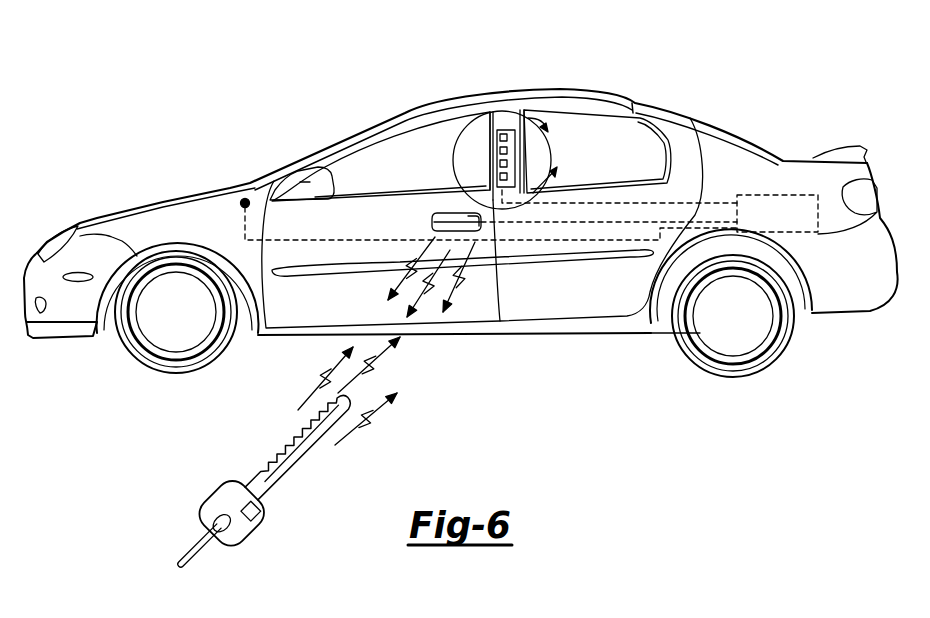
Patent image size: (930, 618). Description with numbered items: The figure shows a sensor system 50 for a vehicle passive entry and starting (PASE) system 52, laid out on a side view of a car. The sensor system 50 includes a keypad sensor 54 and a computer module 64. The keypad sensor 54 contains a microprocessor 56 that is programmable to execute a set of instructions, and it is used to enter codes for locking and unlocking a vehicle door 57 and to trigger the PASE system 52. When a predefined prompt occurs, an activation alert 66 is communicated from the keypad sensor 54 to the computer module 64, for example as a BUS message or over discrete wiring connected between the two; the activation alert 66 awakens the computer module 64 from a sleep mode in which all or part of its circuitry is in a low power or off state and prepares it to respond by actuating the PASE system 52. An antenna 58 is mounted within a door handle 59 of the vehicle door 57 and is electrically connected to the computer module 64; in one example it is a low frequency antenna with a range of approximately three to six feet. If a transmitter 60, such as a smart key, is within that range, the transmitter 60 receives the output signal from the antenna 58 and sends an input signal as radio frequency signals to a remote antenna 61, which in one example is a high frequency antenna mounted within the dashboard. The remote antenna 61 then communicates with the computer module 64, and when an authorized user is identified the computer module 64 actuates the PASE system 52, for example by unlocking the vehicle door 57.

The sensor system 50 is at (730, 111).
The passive entry and starting (PASE) system 52 is at (679, 420).
The keypad sensor 54 is at (506, 112).
The microprocessor 56 is at (493, 178).
The vehicle door 57 is at (312, 268).
The antenna 58 is at (477, 214).
The door handle 59 is at (435, 224).
The transmitter 60 is at (267, 527).
The remote antenna 61 is at (245, 200).
The computer module 64 is at (790, 227).
The activation alert 66 is at (713, 200).